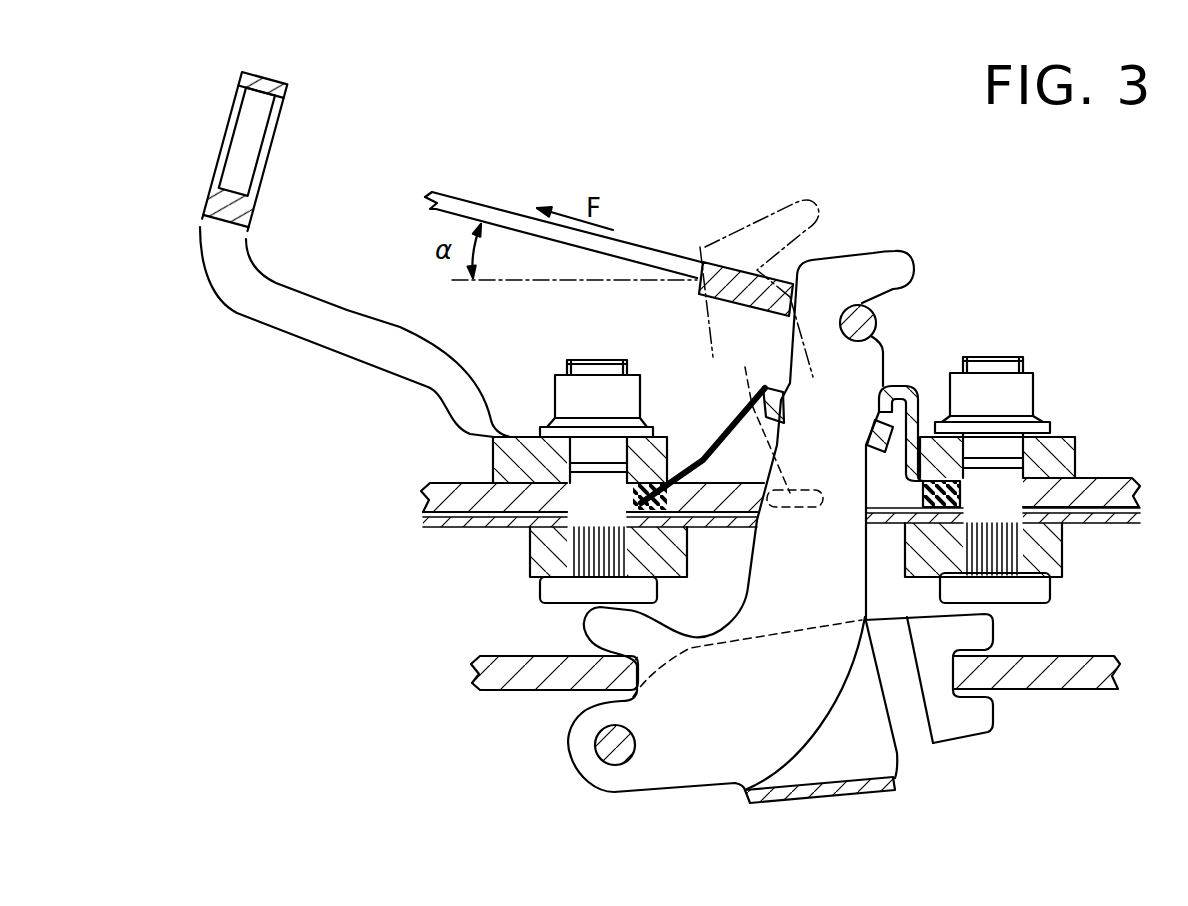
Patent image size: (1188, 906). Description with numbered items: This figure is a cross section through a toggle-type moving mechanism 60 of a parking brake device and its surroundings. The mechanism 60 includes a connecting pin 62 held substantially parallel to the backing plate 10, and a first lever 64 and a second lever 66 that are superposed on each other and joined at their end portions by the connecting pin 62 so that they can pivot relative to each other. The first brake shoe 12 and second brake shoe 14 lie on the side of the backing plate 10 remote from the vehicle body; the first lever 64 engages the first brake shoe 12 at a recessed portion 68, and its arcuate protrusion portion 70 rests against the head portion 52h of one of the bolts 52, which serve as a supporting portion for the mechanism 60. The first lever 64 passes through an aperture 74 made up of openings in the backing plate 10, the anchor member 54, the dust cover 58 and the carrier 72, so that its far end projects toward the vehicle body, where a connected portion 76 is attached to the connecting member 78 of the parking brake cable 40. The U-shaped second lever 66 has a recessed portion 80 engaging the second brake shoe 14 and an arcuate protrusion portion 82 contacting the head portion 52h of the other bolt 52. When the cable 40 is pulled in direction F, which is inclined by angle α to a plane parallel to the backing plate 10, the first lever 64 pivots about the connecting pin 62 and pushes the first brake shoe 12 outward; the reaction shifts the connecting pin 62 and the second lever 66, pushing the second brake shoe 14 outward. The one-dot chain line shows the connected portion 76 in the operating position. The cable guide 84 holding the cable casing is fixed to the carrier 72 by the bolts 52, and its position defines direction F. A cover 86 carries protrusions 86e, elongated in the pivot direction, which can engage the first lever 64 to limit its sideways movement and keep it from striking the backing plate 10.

The backing plate 10 is at (1110, 527).
The first brake shoe 12 is at (523, 680).
The second brake shoe 14 is at (1080, 680).
The parking brake cable 40 is at (497, 212).
The bolts 52 is at (597, 368).
The head portion 52h is at (553, 592).
The anchor member 54 is at (540, 542).
The dust cover 58 is at (1110, 483).
The toggle-type moving mechanism 60 is at (776, 511).
The connecting pin 62 is at (620, 760).
The first lever 64 is at (697, 743).
The second lever 66 is at (857, 753).
The recessed portion 68 is at (627, 678).
The arcuate protrusion portion 70 is at (610, 613).
The carrier 72 is at (443, 487).
The aperture 74 is at (697, 470).
The connected portion 76 is at (823, 297).
The connecting member 78 is at (873, 323).
The recessed portion 80 is at (975, 660).
The arcuate protrusion portion 82 is at (972, 622).
The cable guide 84 is at (293, 323).
The cover 86 is at (921, 373).
The protrusions 86e is at (759, 346).